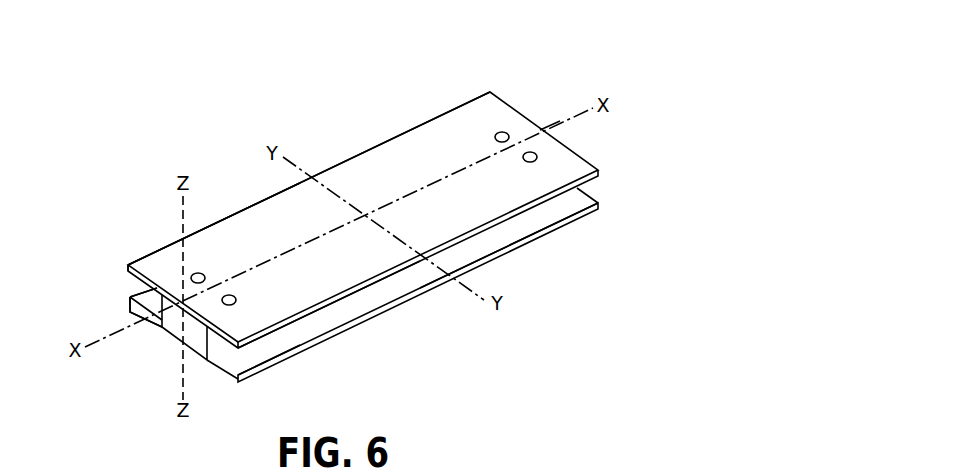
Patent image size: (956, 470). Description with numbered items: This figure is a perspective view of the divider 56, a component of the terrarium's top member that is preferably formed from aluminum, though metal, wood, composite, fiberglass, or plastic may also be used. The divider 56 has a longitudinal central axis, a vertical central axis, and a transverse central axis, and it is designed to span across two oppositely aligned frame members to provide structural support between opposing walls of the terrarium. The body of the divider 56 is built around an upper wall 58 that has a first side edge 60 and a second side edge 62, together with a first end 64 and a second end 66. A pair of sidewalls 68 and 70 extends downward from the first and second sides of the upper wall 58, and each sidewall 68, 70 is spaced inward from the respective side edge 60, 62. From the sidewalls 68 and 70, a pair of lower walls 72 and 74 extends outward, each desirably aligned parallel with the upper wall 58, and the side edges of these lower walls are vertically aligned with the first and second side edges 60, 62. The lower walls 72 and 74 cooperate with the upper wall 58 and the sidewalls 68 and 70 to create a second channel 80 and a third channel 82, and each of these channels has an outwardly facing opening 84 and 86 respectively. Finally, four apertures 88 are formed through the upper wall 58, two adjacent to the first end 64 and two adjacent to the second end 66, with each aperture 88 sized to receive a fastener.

The divider 56 is at (568, 48).
The upper wall 58 is at (297, 239).
The first side edge 60 is at (158, 250).
The second side edge 62 is at (268, 334).
The first end 64 is at (128, 302).
The second end 66 is at (537, 130).
The sidewall 68 is at (140, 290).
The sidewall 70 is at (209, 352).
The lower wall 72 is at (131, 313).
The lower wall 74 is at (258, 377).
The second channel 80 is at (128, 268).
The third channel 82 is at (500, 245).
The outwardly facing opening 84 is at (129, 291).
The outwardly facing opening 86 is at (352, 312).
The aperture 88 is at (229, 294).